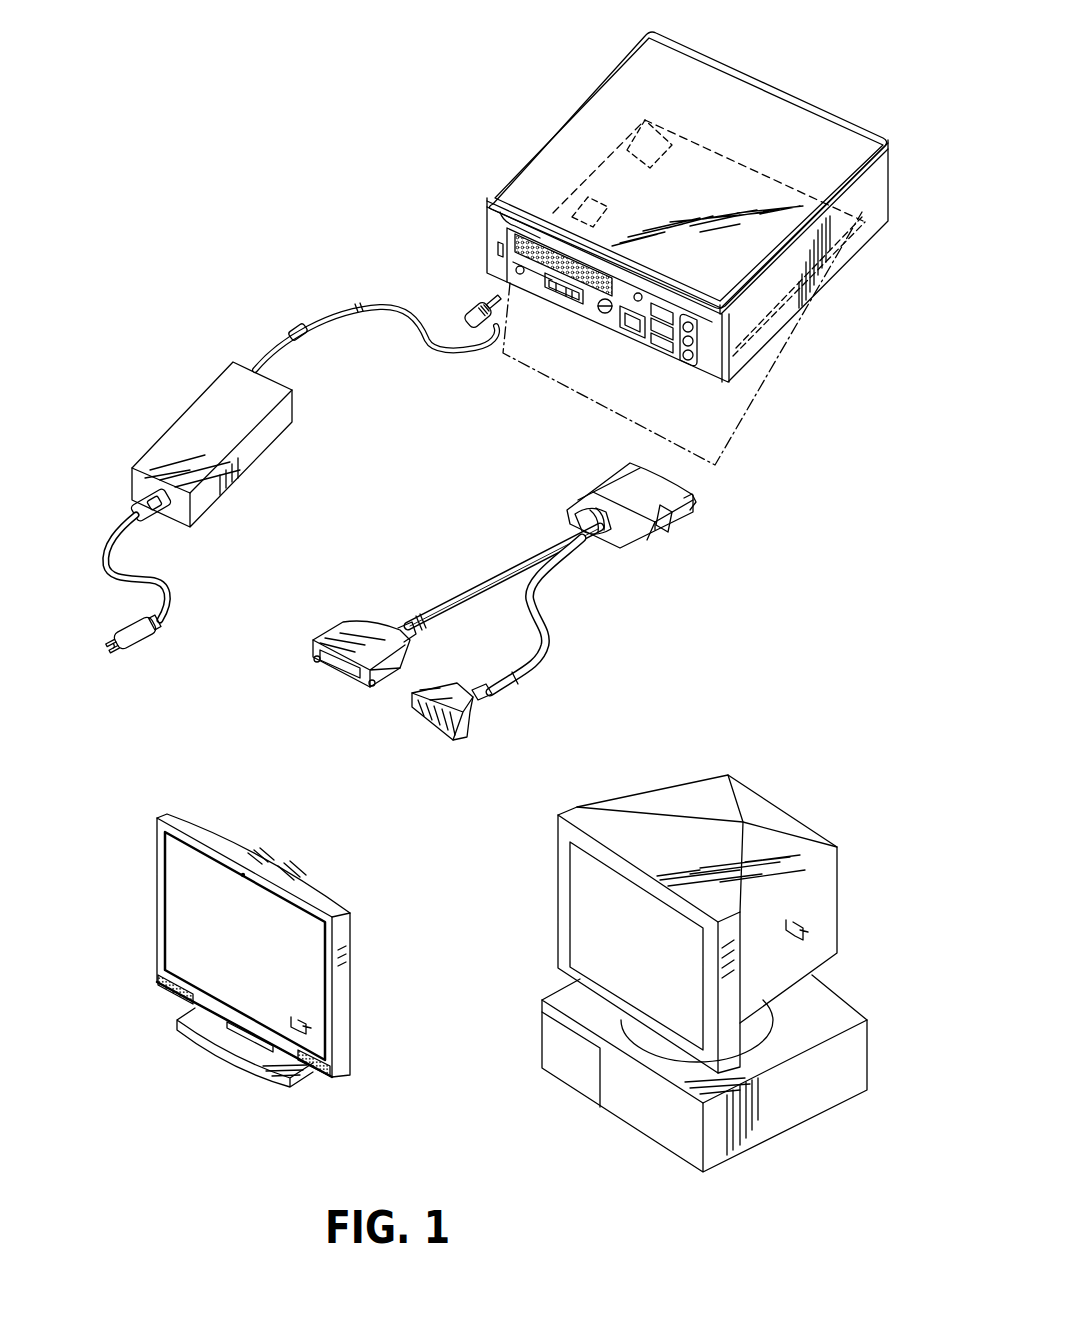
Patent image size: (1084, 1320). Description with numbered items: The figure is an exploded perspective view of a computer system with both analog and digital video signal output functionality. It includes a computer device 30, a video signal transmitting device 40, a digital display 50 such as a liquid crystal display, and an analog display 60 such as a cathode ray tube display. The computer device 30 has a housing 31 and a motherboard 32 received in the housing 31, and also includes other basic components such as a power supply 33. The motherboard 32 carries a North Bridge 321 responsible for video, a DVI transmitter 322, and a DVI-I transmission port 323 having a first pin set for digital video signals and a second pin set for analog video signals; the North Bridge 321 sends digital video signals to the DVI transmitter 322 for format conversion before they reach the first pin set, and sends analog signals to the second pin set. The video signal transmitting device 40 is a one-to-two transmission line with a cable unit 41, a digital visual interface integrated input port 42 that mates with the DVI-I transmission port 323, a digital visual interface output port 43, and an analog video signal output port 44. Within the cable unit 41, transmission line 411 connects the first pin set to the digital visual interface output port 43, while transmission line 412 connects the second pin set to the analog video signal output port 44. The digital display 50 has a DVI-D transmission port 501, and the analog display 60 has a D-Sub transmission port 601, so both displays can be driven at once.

The computer device 30 is at (667, 198).
The housing 31 is at (633, 52).
The motherboard 32 is at (600, 170).
The North Bridge 321 is at (631, 126).
The digital visual interface (DVI) transmitter 322 is at (573, 197).
The DVI-I transmission port 323 is at (563, 304).
The power supply 33 is at (232, 427).
The video signal transmitting device 40 is at (487, 604).
The cable unit 41 is at (490, 605).
The transmission line 411 is at (500, 566).
The transmission line 412 is at (546, 594).
The digital visual interface integrated input port 42 is at (618, 478).
The digital visual interface output port 43 is at (327, 627).
The analog video signal output port 44 is at (474, 720).
The digital display 50 is at (292, 950).
The transmission port 501 is at (316, 1037).
The analog display 60 is at (724, 972).
The transmission port 601 is at (806, 925).